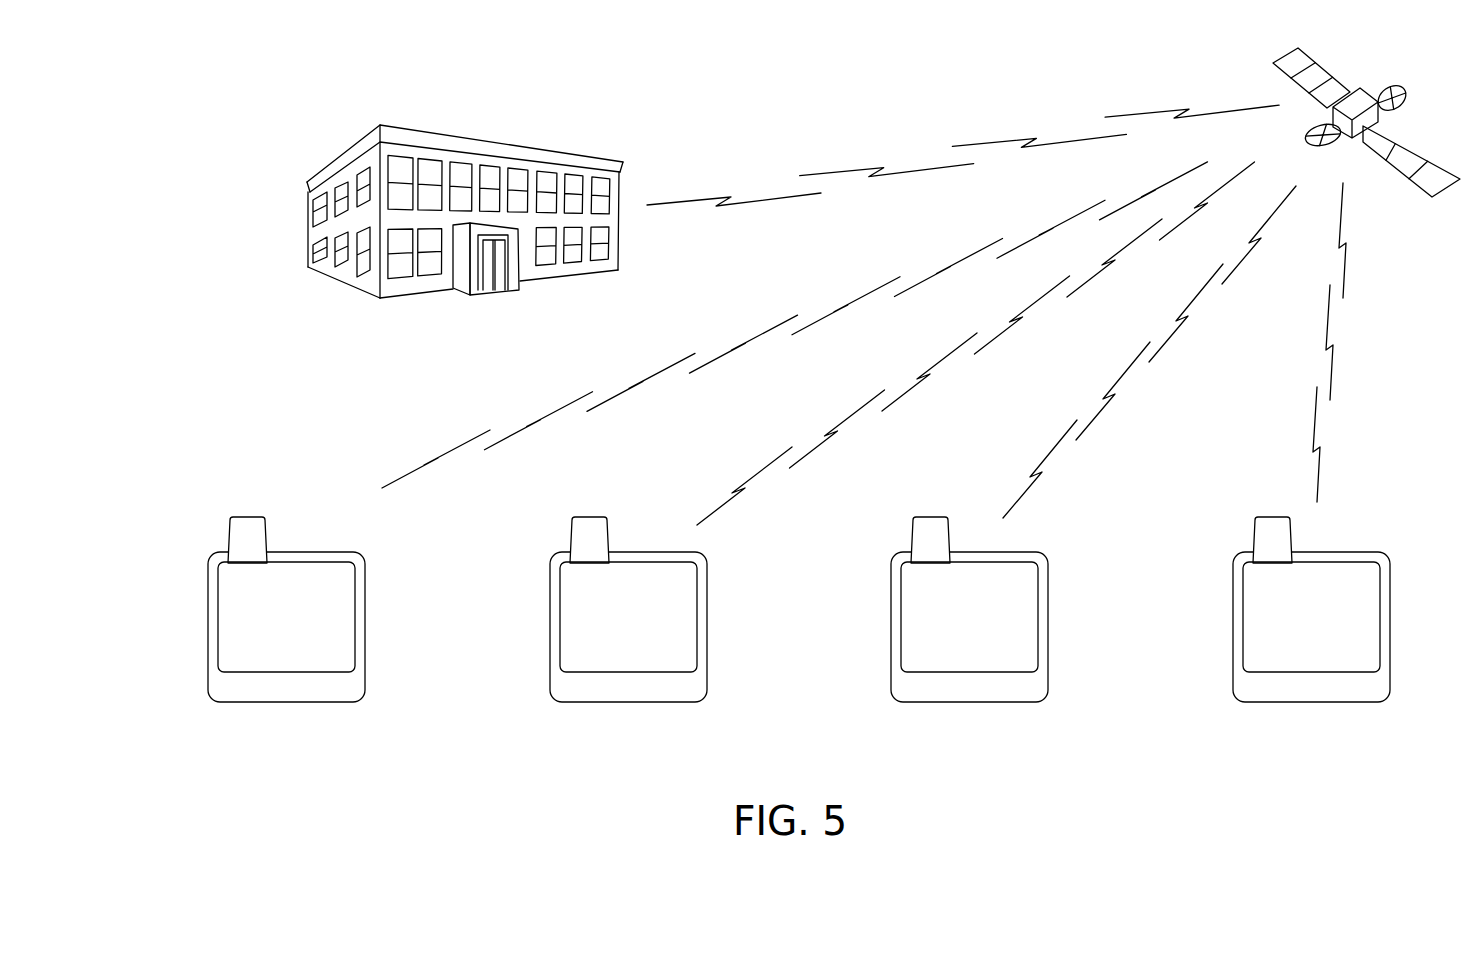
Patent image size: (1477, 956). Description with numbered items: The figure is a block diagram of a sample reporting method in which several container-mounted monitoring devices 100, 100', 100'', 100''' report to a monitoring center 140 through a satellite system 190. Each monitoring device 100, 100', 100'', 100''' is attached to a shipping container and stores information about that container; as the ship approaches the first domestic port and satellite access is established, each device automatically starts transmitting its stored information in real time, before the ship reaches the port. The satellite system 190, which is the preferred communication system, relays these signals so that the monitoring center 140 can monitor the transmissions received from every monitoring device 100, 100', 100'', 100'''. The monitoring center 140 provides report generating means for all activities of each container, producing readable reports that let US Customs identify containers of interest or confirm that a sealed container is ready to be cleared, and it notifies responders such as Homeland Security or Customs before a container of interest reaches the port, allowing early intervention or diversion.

The monitoring device 100 is at (286, 609).
The monitoring device 100' is at (628, 609).
The monitoring device 100'' is at (969, 609).
The monitoring device 100''' is at (1311, 609).
The monitoring center 140 is at (307, 230).
The satellite system 190 is at (1357, 87).